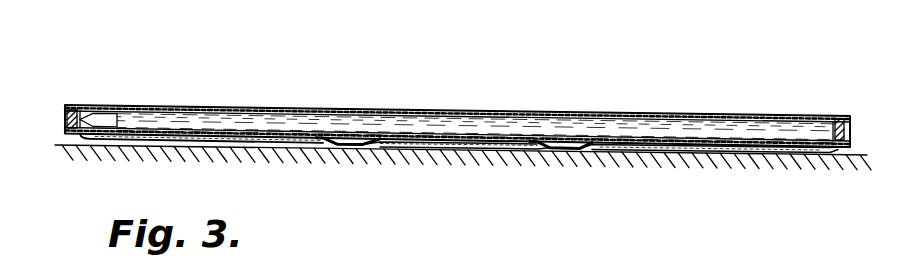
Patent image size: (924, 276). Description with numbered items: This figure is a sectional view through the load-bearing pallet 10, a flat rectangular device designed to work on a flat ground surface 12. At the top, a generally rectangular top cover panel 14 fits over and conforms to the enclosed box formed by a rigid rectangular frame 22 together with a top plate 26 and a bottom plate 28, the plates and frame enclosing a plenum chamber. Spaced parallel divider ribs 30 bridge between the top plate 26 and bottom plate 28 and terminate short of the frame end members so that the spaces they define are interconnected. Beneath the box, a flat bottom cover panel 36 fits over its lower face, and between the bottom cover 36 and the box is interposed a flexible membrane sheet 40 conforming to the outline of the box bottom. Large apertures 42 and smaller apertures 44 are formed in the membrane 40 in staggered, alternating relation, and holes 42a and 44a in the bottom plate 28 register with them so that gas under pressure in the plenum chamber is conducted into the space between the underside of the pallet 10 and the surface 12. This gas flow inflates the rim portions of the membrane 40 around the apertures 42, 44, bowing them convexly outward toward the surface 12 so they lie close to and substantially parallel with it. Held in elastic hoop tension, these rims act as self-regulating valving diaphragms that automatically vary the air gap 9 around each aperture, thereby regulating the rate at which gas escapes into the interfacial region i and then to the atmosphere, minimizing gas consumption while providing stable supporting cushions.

The load-bearing pallet 10 is at (77, 92).
The flat ground surface 12 is at (60, 141).
The top cover panel 14 is at (127, 107).
The rigid rectangular frame 22 is at (107, 107).
The top plate 26 is at (343, 117).
The divider ribs 30 is at (228, 122).
The large apertures 42 is at (284, 146).
The holes 42a is at (207, 135).
The smaller apertures 44 is at (410, 150).
The holes 44a is at (455, 130).
The flat bottom cover panel 36 is at (565, 150).
The flexible membrane sheet 40 is at (608, 153).
The air gap 9 is at (103, 140).
The bottom plate 28 is at (257, 150).
The interfacial region i is at (847, 155).